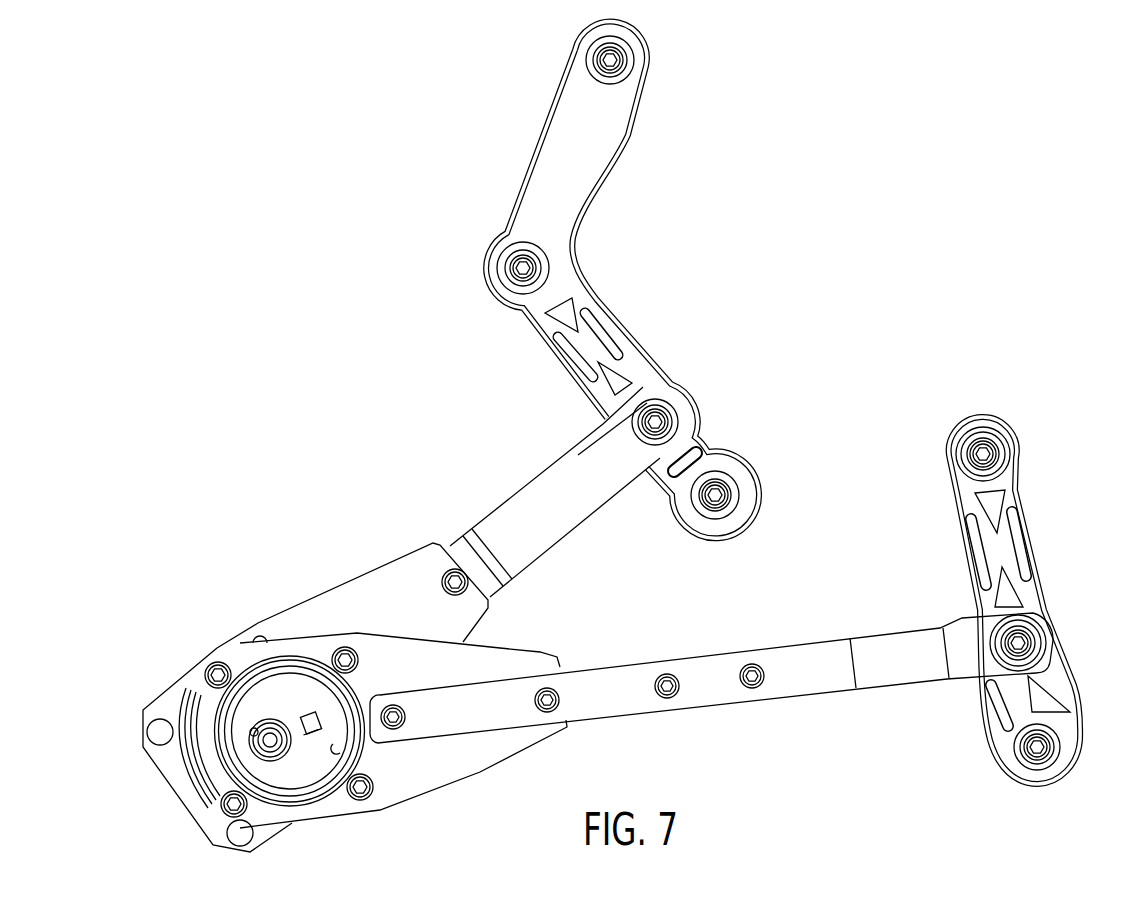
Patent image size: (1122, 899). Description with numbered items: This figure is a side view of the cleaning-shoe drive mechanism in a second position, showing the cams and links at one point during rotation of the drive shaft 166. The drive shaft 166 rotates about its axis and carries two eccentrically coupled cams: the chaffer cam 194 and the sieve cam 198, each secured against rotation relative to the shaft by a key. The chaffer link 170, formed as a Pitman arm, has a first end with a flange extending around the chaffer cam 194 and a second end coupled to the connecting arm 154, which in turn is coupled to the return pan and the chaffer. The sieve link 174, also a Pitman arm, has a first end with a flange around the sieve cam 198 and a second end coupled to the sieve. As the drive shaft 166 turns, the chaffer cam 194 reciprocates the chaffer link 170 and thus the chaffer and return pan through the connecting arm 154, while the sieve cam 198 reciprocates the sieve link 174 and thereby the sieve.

The connecting arm 154 is at (543, 192).
The chaffer link 170 is at (528, 505).
The sieve link 174 is at (602, 683).
The chaffer cam 194 is at (198, 742).
The sieve cam 198 is at (305, 765).
The drive shaft 166 is at (272, 745).